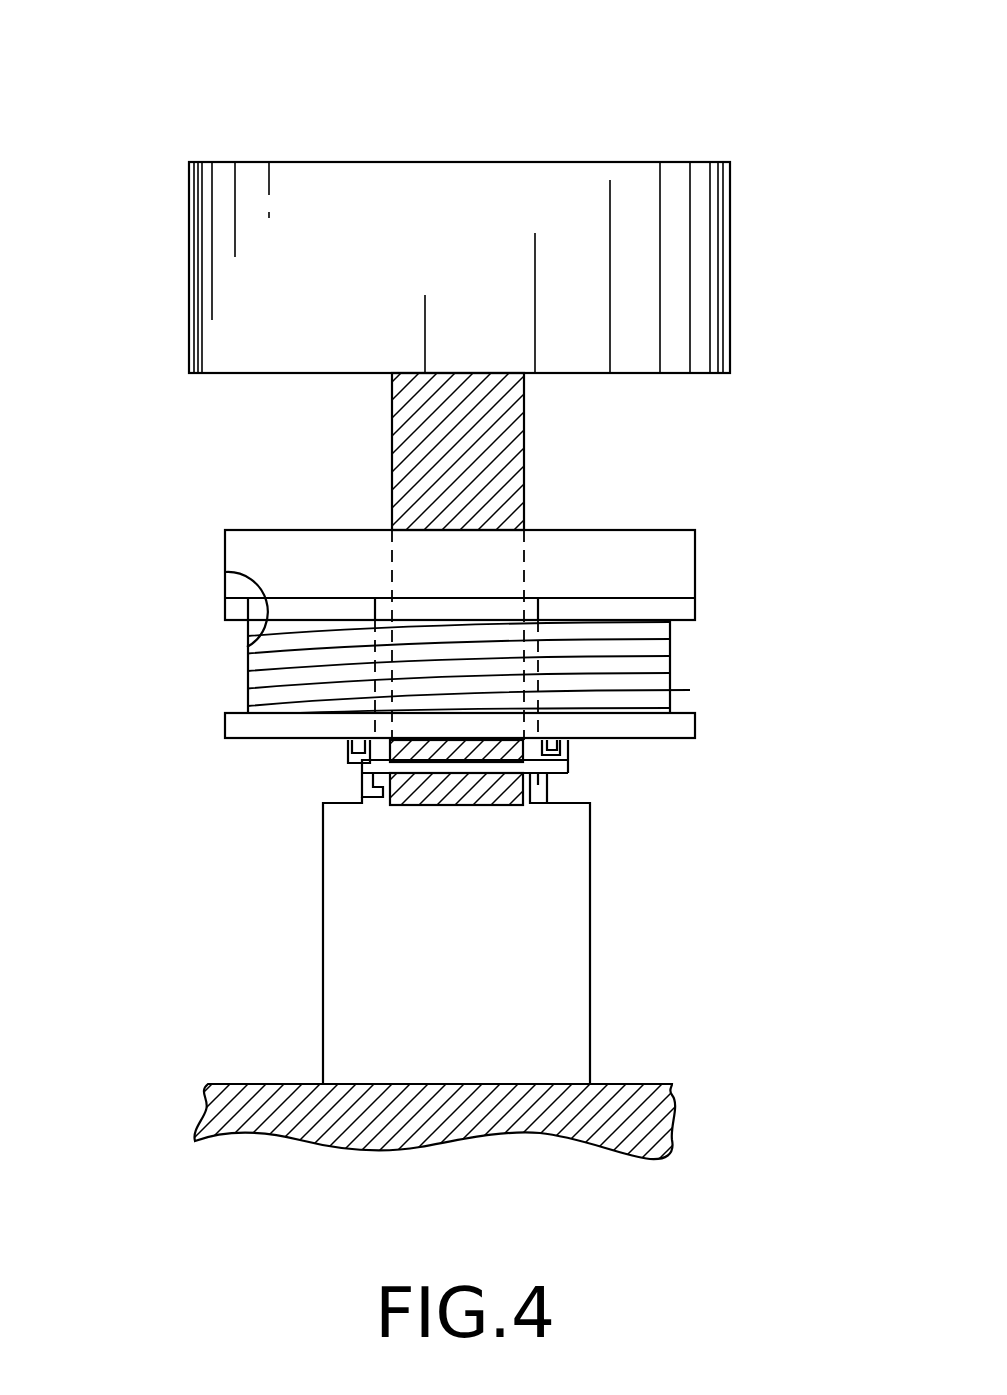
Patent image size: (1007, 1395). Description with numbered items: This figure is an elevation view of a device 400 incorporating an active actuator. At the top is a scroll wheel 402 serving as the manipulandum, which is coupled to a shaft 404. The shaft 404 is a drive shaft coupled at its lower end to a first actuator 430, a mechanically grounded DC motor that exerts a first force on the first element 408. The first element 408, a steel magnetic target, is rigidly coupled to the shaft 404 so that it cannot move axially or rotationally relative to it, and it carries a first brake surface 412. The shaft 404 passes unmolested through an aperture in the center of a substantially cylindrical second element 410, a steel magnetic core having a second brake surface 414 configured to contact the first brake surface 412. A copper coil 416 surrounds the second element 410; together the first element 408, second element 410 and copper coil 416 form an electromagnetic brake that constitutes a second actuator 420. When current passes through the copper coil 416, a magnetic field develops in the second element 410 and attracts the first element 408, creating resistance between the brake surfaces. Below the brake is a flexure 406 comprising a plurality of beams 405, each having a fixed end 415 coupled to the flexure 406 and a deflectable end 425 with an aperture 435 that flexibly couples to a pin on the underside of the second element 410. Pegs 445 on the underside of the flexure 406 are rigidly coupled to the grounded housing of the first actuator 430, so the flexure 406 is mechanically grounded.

The device 400 is at (674, 124).
The scroll wheel 402 is at (705, 277).
The shaft 404 is at (511, 455).
The beams 405 is at (457, 748).
The flexure 406 is at (440, 762).
The first element 408 is at (667, 572).
The second element 410 is at (667, 610).
The first brake surface 412 is at (248, 637).
The second brake surface 414 is at (225, 572).
The fixed end 415 is at (372, 770).
The copper coil 416 is at (660, 665).
The second actuator 420 is at (190, 693).
The deflectable end 425 is at (567, 758).
The first actuator 430 is at (548, 1010).
The aperture 435 is at (568, 758).
The pegs 445 is at (548, 770).